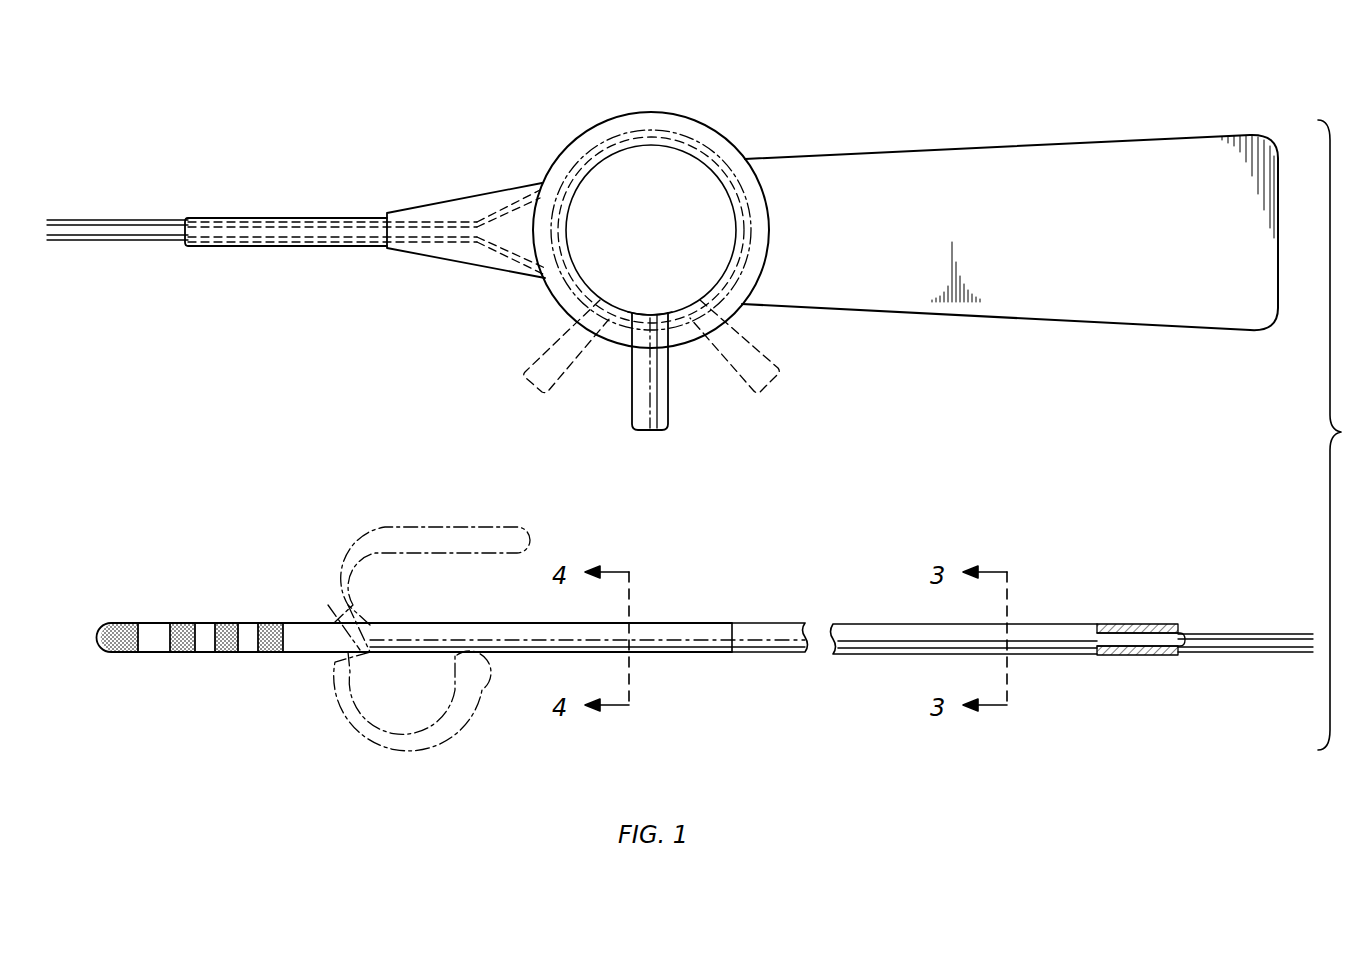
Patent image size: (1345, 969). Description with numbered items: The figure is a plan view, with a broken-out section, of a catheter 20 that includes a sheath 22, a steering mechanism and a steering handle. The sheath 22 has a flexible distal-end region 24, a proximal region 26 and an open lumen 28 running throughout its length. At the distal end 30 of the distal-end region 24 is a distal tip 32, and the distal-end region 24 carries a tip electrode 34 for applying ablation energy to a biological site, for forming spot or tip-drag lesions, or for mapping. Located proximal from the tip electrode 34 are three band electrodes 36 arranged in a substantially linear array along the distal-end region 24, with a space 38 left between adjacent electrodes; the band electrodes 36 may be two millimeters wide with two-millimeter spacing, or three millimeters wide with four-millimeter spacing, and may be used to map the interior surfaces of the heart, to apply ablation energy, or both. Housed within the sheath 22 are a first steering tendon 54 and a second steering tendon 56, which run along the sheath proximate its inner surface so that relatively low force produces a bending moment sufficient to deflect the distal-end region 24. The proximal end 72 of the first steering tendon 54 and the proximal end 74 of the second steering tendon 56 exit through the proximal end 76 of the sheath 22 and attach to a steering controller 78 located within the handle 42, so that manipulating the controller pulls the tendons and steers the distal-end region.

The catheter 20 is at (670, 660).
The sheath 22 is at (320, 247).
The flexible distal-end region 24 is at (672, 620).
The proximal region 26 is at (205, 248).
The open lumen 28 is at (1143, 646).
The distal end 30 is at (184, 734).
The distal tip 32 is at (110, 606).
The tip electrode 34 is at (98, 655).
The band electrodes 36 is at (182, 620).
The space 38 is at (204, 654).
The handle 42 is at (1120, 160).
The first steering tendon 54 is at (88, 242).
The second steering tendon 56 is at (98, 218).
The proximal end of the first steering tendon 72 is at (480, 270).
The proximal end of the second steering tendon 74 is at (455, 212).
The proximal end of the sheath 76 is at (460, 250).
The steering controller 78 is at (683, 178).